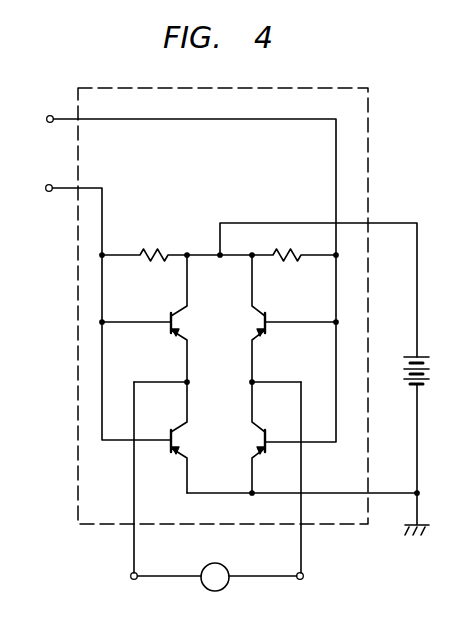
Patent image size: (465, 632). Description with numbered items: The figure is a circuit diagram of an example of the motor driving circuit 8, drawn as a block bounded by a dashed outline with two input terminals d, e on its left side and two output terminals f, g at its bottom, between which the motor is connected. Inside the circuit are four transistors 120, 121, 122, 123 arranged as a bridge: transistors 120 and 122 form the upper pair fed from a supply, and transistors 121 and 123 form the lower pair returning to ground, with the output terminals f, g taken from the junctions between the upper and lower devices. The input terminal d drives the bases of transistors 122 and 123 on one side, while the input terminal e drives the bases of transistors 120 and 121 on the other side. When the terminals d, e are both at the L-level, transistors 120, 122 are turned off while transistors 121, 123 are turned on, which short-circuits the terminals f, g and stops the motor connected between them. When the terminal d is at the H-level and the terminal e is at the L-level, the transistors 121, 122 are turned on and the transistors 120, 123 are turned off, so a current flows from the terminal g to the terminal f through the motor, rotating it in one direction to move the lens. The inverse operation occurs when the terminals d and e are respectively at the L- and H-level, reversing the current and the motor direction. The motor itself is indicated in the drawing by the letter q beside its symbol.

The motor driving circuit 8 is at (369, 105).
The transistor 120 is at (171, 313).
The transistor 121 is at (171, 430).
The transistor 122 is at (270, 304).
The transistor 123 is at (270, 424).
The input terminal d is at (184, 275).
The input terminal e is at (101, 308).
The output terminal f is at (164, 494).
The output terminal g is at (268, 494).
The motor q is at (222, 582).